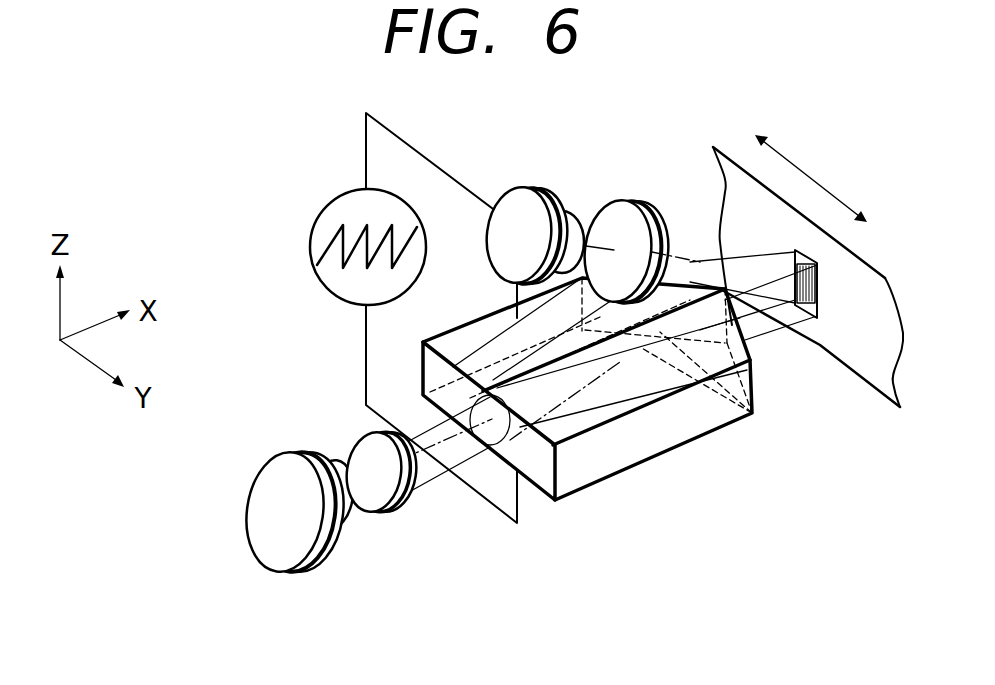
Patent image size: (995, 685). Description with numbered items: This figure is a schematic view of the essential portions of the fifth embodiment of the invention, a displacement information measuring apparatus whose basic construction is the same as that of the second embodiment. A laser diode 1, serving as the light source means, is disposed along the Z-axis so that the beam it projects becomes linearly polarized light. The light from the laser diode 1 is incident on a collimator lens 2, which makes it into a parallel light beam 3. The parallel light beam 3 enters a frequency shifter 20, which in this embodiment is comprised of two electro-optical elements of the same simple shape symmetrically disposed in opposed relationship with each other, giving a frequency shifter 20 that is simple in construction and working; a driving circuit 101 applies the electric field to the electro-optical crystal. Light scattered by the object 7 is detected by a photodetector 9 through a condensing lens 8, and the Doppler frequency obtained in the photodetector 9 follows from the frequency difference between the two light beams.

The laser diode 1 is at (262, 480).
The collimator lens 2 is at (363, 443).
The parallel light beam 3 is at (437, 481).
The object 7 is at (852, 353).
The condensing lens 8 is at (612, 210).
The photodetector 9 is at (520, 203).
The frequency shifter 20 is at (670, 432).
The driving circuit 101 is at (318, 213).